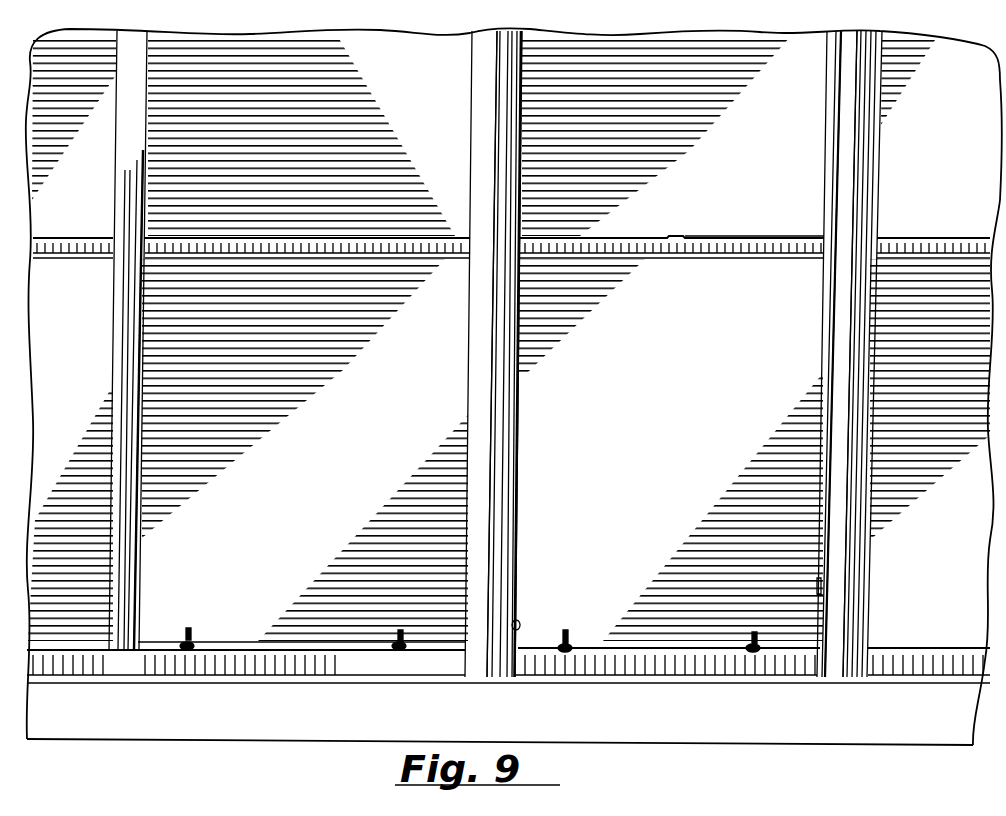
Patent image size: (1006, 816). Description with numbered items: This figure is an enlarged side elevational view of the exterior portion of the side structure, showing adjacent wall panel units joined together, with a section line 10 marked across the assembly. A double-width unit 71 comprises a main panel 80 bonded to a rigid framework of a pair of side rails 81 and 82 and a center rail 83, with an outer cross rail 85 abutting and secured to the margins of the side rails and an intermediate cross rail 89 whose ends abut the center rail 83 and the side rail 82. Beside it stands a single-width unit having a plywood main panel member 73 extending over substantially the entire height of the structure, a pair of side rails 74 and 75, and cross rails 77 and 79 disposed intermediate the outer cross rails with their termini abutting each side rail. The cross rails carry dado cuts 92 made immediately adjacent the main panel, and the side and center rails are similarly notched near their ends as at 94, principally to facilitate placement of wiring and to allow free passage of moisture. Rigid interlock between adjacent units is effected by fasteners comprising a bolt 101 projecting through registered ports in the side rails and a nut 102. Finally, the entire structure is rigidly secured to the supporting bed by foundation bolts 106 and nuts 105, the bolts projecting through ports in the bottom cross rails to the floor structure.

The section line 10- 10 is at (730, 201).
The unit 71 is at (240, 600).
The main panel member 73 is at (690, 378).
The side rail 74 is at (510, 393).
The side rail 75 is at (835, 336).
The cross rail 77 is at (628, 672).
The cross rail 79 is at (753, 238).
The main panel 80 is at (305, 537).
The side rail 81 is at (866, 226).
The side rail 82 is at (476, 395).
The center rail 83 is at (118, 168).
The cross rail 85 is at (316, 672).
The cross rail 89 is at (447, 256).
The dado cut 92 is at (680, 247).
The notch 94 is at (822, 588).
The bolt 101 is at (455, 660).
The nut 102 is at (518, 625).
The nut 105 is at (397, 645).
The foundation bolt 106 is at (405, 645).